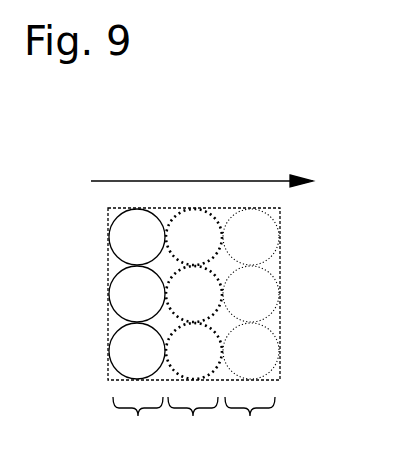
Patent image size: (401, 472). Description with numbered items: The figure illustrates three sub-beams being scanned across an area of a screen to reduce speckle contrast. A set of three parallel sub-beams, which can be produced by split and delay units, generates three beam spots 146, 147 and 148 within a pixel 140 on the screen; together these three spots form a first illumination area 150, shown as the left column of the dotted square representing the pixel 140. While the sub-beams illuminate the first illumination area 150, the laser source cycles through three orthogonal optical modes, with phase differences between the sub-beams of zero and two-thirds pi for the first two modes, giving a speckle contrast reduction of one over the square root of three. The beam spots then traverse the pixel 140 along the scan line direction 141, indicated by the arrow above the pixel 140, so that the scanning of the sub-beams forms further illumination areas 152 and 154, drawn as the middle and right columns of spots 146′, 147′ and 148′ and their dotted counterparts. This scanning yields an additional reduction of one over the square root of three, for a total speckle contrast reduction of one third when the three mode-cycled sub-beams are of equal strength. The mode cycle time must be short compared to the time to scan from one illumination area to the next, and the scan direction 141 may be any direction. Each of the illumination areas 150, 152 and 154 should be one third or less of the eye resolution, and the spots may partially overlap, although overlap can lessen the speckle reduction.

The pixel 140 is at (282, 262).
The scan line direction 141 is at (189, 180).
The beam spot 146 is at (153, 248).
The beam spot 147 is at (153, 305).
The beam spot 148 is at (153, 362).
The first nozzle of second group 146′ is at (213, 248).
The second nozzle of second group 147′ is at (213, 305).
The third nozzle of second group 148′ is at (213, 362).
The first illumination area 150 is at (138, 423).
The illumination area 152 is at (193, 423).
The illumination area 154 is at (250, 423).